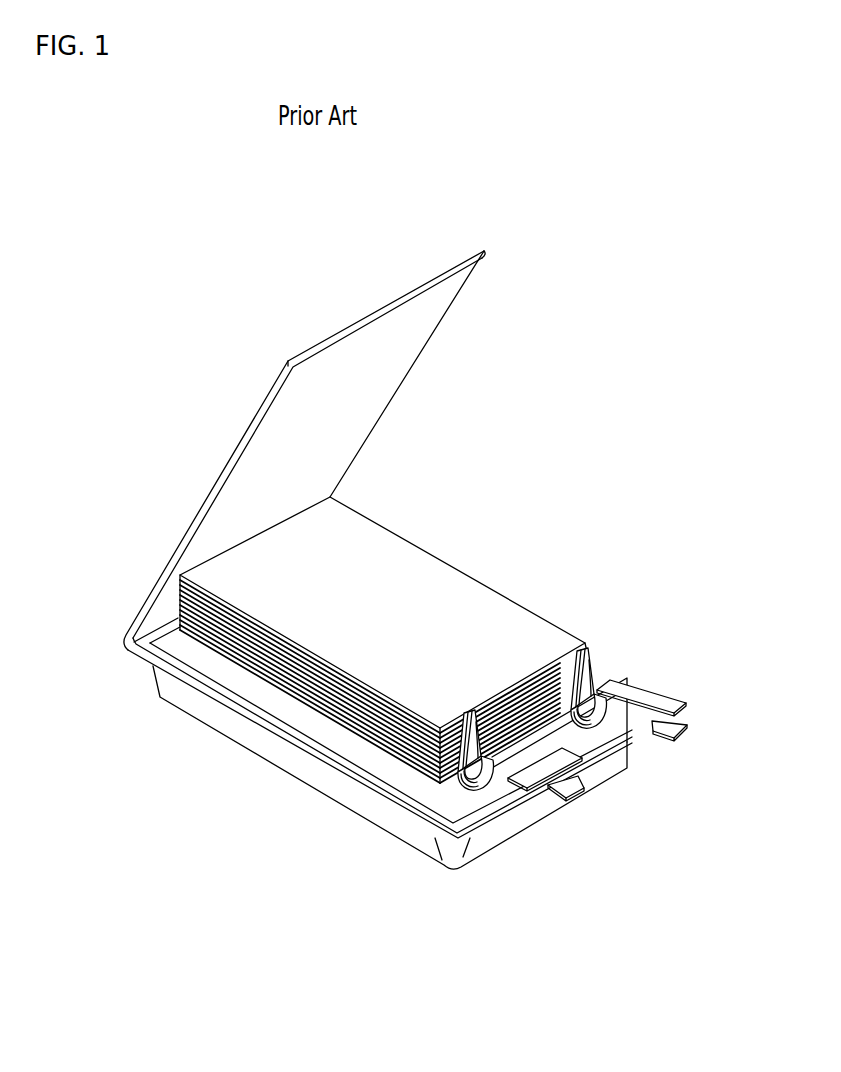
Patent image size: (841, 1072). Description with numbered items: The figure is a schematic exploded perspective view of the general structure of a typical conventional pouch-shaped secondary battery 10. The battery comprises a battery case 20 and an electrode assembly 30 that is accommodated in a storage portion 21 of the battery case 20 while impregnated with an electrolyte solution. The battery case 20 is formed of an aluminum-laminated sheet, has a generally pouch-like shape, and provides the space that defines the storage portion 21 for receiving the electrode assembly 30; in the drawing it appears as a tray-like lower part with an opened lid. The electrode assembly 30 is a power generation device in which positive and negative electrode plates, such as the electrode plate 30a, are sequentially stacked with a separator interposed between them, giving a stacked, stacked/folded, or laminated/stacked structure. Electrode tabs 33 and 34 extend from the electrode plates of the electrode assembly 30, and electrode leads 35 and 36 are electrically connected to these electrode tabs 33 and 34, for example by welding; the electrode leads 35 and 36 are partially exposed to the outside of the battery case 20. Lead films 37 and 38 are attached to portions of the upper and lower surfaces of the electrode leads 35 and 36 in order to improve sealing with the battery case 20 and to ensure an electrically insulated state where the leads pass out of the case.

The pouch-shaped secondary battery 10 is at (330, 177).
The battery case 20 is at (201, 444).
The storage portion 21 is at (243, 692).
The electrode assembly 30 is at (489, 553).
The electrode plate 30a is at (357, 683).
The electrode tab 33 is at (468, 783).
The electrode tab 34 is at (578, 672).
The electrode lead 35 is at (578, 797).
The electrode lead 36 is at (686, 735).
The lead film 37 is at (528, 778).
The lead film 38 is at (667, 700).